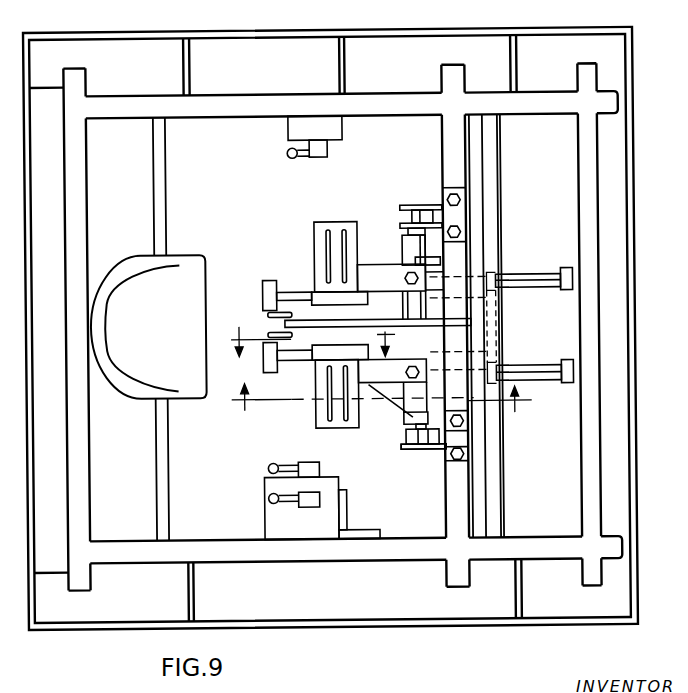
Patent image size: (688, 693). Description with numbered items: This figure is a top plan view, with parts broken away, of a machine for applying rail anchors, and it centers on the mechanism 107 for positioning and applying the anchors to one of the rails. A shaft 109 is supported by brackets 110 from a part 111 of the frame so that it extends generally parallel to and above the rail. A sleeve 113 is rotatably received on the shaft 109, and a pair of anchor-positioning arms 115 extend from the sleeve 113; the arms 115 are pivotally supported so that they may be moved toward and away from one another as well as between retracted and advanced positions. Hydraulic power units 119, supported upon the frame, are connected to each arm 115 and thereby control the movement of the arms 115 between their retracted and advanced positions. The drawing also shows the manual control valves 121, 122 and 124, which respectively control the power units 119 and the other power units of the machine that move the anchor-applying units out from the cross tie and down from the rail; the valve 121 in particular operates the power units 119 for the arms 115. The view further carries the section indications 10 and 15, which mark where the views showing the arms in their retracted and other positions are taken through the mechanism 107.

The section line 10- 10 is at (385, 413).
The section line 15- 15 is at (311, 354).
The mechanism 107 is at (90, 486).
The shaft 109 is at (404, 441).
The brackets 110 is at (408, 206).
The part of the frame 111 is at (441, 503).
The sleeve 113 is at (405, 421).
The anchor-positioning arms 115 is at (400, 241).
The hydraulic power units 119 is at (528, 370).
The manual control valve 121 is at (285, 136).
The manual control valve 122 is at (266, 466).
The manual control valve 124 is at (318, 503).